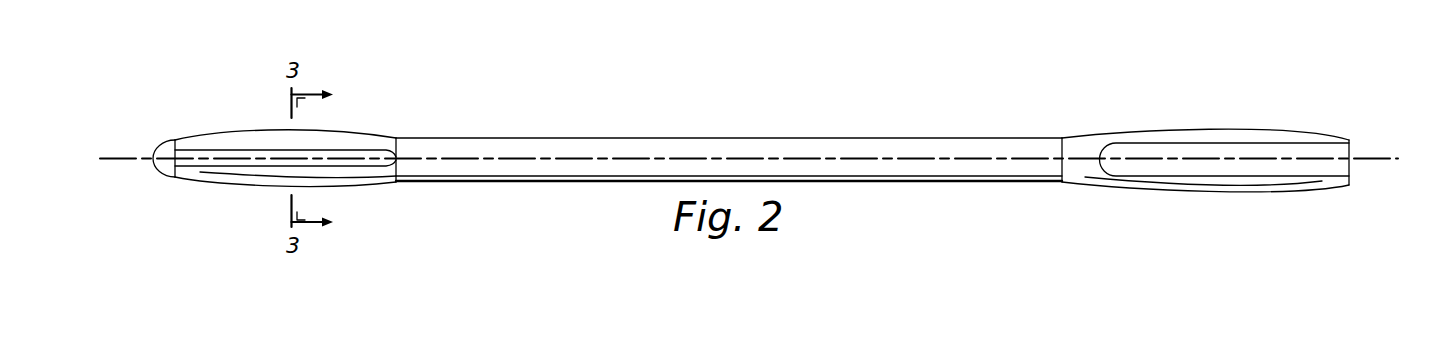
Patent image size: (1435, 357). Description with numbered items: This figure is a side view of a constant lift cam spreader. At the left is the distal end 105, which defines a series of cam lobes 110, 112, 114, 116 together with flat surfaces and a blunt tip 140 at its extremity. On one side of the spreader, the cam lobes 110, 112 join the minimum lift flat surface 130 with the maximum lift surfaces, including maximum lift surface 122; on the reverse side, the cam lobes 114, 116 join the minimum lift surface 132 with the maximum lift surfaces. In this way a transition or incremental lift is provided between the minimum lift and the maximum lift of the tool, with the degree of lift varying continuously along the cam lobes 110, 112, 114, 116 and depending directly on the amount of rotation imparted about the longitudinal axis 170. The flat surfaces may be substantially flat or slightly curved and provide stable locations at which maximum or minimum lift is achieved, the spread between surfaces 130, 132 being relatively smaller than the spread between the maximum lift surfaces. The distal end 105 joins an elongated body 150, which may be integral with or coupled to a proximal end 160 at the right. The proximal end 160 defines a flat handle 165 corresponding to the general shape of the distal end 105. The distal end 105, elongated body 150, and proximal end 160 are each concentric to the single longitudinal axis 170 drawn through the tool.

The distal end 105 is at (255, 69).
The cam lobe 110 is at (194, 136).
The cam lobe 112 is at (262, 140).
The cam lobe 114 is at (262, 173).
The cam lobe 116 is at (192, 182).
The maximum lift flat surface 122 is at (333, 170).
The minimum lift flat surface 130 is at (362, 132).
The minimum lift flat surface 132 is at (362, 187).
The blunt tip 140 is at (162, 168).
The elongated body 150 is at (823, 138).
The proximal end 160 is at (1238, 98).
The handle 165 is at (1207, 184).
The longitudinal axis 170 is at (117, 157).